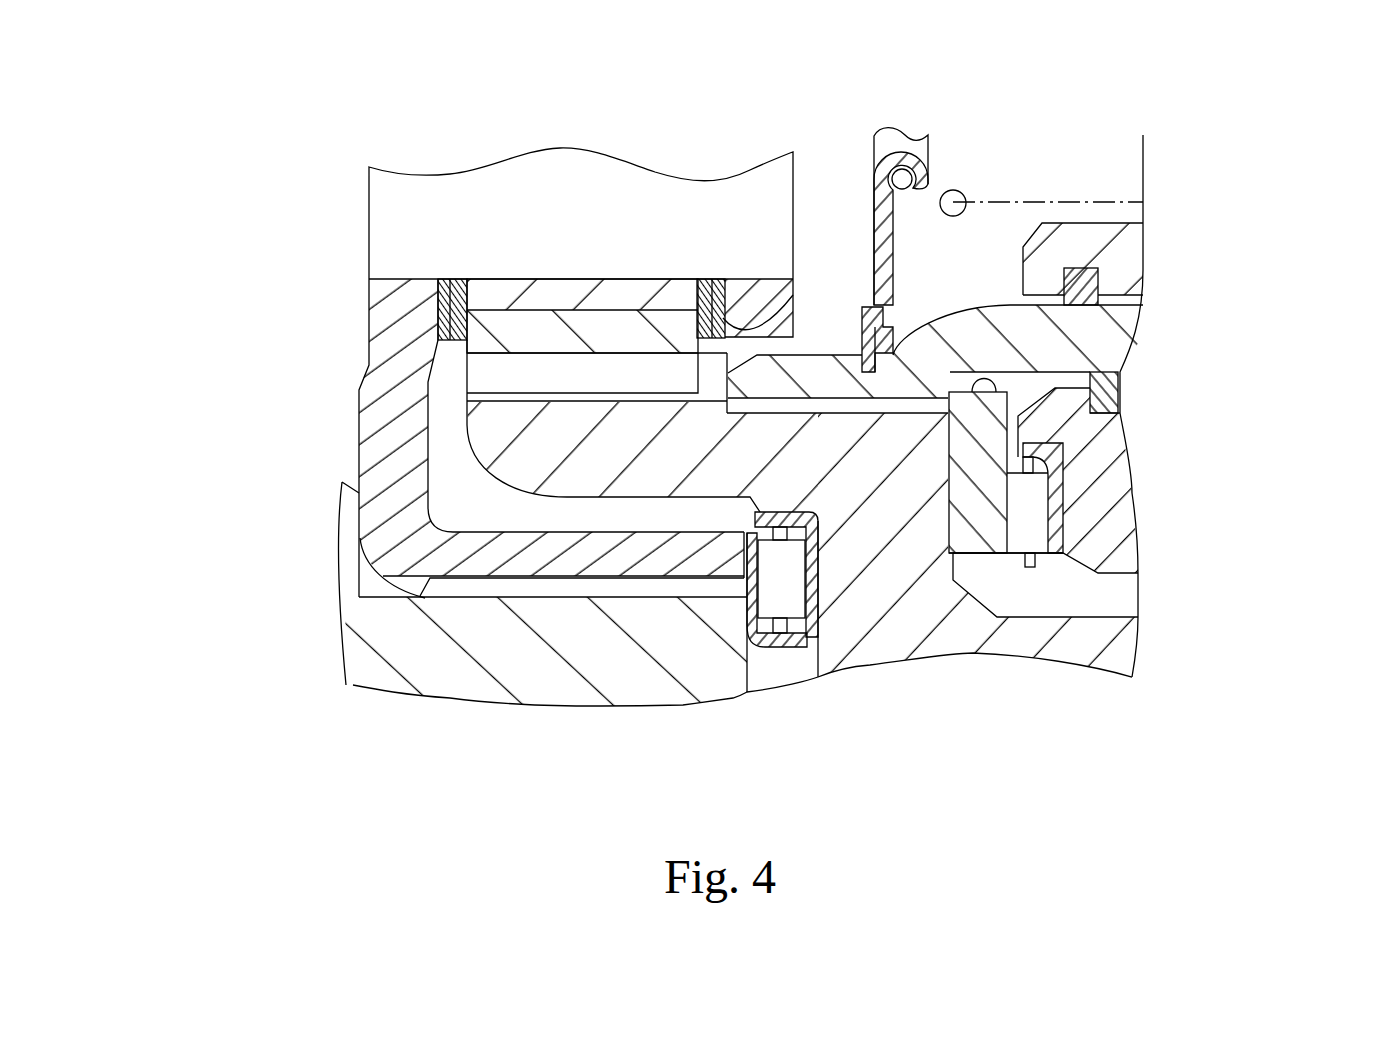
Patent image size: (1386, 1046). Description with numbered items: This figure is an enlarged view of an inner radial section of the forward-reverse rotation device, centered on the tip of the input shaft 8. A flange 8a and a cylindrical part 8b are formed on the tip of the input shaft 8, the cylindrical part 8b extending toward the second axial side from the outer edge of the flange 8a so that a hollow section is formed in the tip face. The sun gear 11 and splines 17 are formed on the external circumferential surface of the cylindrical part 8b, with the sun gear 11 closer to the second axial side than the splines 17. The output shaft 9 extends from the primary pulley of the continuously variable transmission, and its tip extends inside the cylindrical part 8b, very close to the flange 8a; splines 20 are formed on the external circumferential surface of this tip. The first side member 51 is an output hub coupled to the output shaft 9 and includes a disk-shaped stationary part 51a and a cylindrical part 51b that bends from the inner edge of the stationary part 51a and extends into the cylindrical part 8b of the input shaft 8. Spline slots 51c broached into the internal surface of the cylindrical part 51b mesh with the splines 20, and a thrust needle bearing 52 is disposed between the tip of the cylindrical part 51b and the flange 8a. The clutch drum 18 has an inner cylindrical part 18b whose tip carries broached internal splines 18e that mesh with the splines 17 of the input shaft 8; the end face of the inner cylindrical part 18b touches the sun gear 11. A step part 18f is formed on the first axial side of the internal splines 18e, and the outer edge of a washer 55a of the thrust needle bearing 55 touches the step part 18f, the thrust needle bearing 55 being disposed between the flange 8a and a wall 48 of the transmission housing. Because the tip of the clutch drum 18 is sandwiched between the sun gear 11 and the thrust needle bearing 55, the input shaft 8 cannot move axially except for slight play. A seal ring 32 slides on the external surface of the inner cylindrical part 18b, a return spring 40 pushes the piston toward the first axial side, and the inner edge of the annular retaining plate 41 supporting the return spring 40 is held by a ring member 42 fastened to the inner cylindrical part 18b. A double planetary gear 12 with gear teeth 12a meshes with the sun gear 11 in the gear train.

The input shaft 8 is at (1020, 647).
The flange 8a is at (868, 542).
The cylindrical part 8b is at (570, 487).
The output shaft 9 is at (630, 673).
The sun gear 11 is at (722, 352).
The double planetary gear 12 is at (558, 218).
The gear teeth 12a is at (520, 367).
The splines 17 is at (910, 407).
The clutch drum 18 is at (1157, 327).
The inner cylindrical part 18b is at (1093, 345).
The internal splines 18e is at (863, 408).
The step part 18f is at (980, 463).
The splines 20 is at (473, 590).
The seal ring 32 is at (1100, 270).
The return spring 40 is at (1028, 202).
The retaining plate 41 is at (895, 230).
The ring member 42 is at (860, 333).
The wall 48 is at (1100, 513).
The first side member 51 is at (384, 440).
The stationary part 51a is at (390, 327).
The cylindrical part 51b is at (645, 555).
The spline slots 51c is at (405, 583).
The thrust needle bearing 52 is at (788, 656).
The thrust needle bearing 55 is at (1050, 593).
The washer 55a is at (1017, 432).